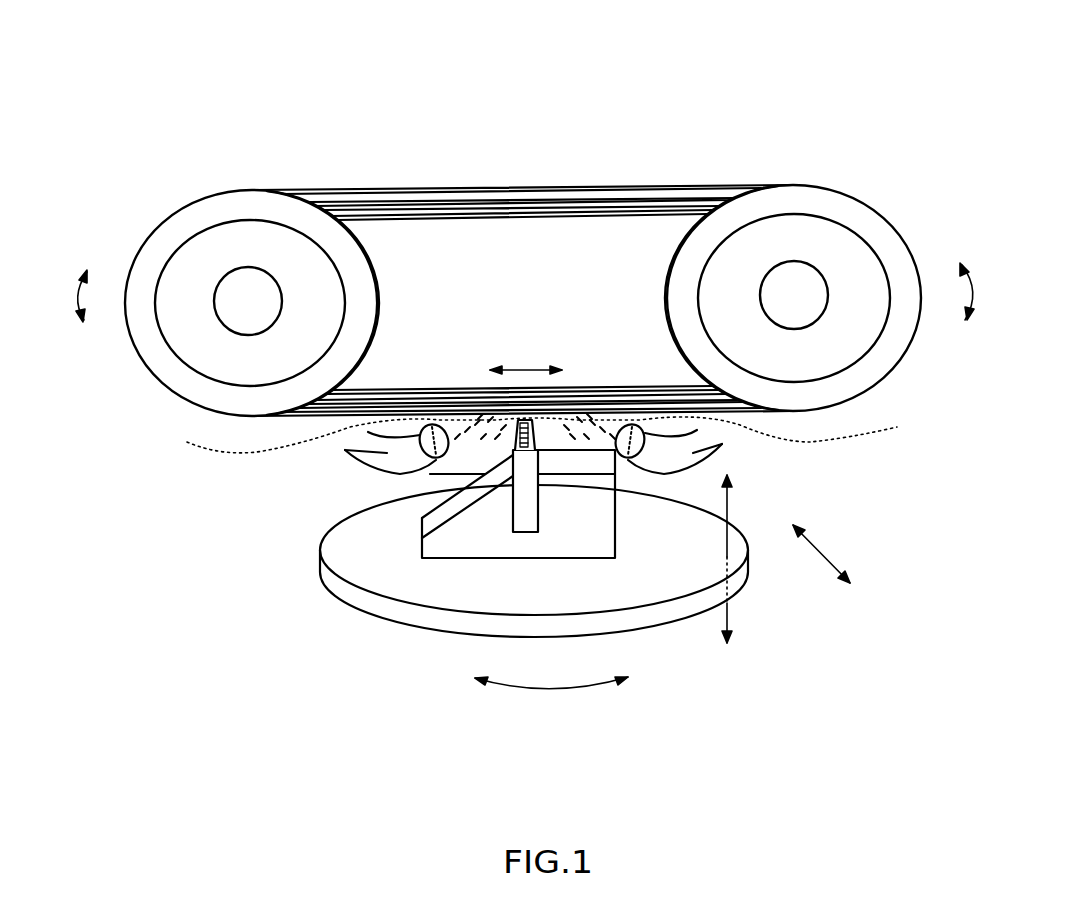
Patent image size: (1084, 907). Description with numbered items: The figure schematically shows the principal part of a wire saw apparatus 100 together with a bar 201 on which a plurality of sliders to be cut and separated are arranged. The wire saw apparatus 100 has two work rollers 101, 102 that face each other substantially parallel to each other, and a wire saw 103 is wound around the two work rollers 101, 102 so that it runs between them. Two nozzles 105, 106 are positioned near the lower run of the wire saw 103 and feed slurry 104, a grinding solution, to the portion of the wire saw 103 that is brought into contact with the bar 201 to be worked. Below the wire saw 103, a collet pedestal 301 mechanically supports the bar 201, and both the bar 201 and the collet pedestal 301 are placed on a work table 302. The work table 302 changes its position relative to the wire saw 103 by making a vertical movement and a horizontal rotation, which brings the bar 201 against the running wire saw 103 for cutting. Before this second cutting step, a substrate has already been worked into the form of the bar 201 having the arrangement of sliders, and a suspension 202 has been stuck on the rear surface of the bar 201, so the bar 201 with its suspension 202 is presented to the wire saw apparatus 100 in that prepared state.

The wire saw apparatus 100 is at (513, 137).
The work roller 101 is at (228, 200).
The work roller 102 is at (787, 197).
The wire saw 103 is at (372, 190).
The slurry 104 is at (539, 432).
The nozzle 105 is at (345, 452).
The nozzle 106 is at (713, 447).
The bar 201 is at (512, 434).
The suspension 202 is at (525, 518).
The collet pedestal 301 is at (603, 533).
The work table 302 is at (435, 618).